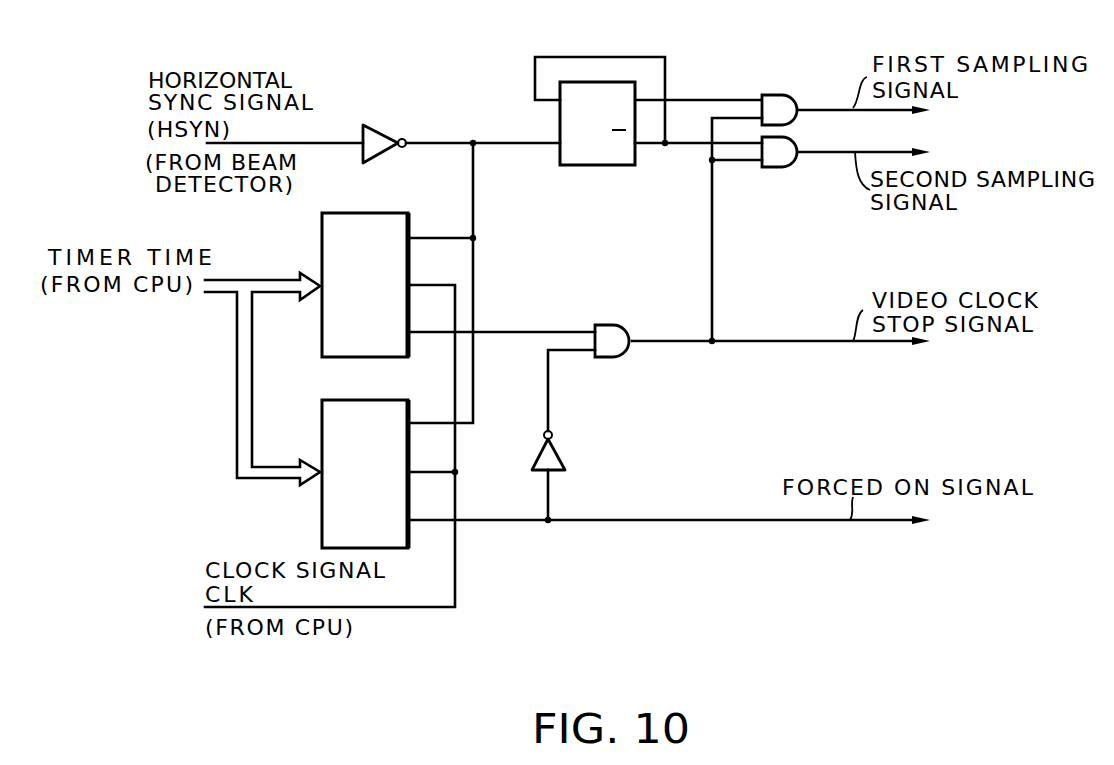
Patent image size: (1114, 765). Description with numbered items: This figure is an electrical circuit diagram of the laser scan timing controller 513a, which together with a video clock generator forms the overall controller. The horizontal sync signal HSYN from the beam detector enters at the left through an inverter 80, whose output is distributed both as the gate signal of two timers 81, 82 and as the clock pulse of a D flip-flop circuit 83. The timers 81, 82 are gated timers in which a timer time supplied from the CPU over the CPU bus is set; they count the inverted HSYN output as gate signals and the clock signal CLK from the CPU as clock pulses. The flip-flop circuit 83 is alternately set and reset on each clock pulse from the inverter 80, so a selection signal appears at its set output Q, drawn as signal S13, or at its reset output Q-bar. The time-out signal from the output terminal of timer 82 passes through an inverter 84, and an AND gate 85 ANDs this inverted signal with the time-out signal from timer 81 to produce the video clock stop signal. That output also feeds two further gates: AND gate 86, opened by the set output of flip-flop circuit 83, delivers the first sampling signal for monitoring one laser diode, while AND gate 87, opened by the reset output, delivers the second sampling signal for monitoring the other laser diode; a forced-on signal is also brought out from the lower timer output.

The inverter 80 is at (403, 106).
The timer 81 is at (408, 213).
The timer 82 is at (395, 400).
The D flip-flop circuit 83 is at (612, 165).
The inverter 84 is at (563, 452).
The AND gate 85 is at (613, 325).
The AND gate 86 is at (773, 95).
The AND gate 87 is at (780, 167).
The flip-flop Q output signal S13 is at (700, 98).
The laser scan timing controller 513a is at (707, 567).